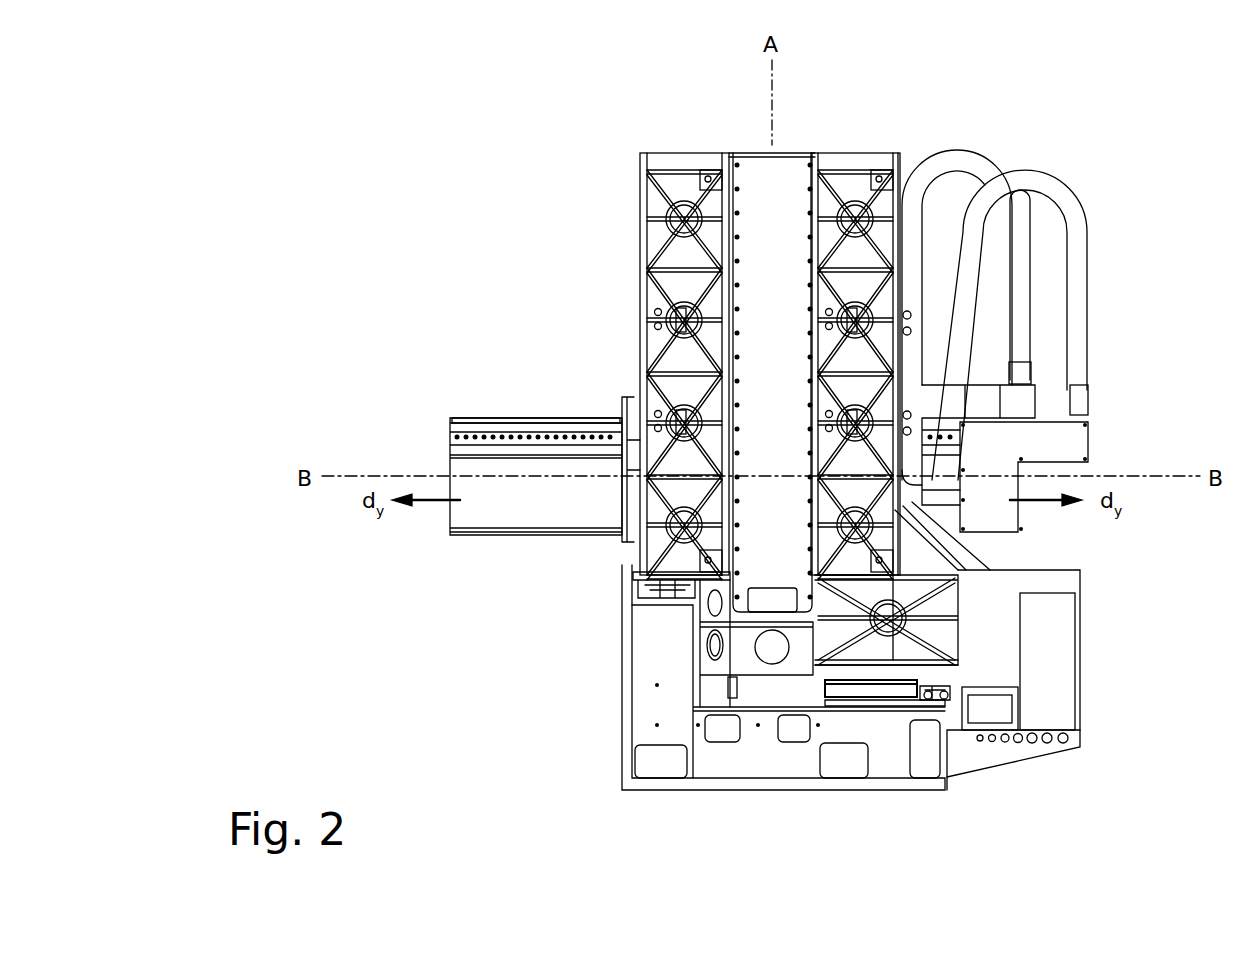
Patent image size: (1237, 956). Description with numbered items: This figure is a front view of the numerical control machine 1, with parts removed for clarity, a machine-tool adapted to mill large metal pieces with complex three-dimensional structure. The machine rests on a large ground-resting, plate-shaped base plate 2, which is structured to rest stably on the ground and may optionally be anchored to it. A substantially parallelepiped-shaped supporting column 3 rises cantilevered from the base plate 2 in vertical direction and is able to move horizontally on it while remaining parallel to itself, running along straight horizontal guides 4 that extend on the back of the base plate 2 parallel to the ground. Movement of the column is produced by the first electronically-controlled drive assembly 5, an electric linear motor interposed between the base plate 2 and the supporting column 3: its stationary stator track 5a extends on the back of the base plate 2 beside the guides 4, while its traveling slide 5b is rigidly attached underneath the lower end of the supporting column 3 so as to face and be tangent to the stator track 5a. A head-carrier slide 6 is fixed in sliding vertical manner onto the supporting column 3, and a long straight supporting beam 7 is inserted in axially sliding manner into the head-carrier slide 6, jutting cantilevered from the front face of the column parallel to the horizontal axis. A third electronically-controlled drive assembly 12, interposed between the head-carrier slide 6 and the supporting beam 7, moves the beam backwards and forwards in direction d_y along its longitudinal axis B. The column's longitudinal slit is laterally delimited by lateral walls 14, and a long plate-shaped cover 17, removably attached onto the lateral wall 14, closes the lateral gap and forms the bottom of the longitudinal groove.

The numerical control machine 1 is at (362, 250).
The base plate 2 is at (748, 768).
The supporting column 3 is at (662, 162).
The straight horizontal guides 4 is at (665, 580).
The first electronically-controlled drive assembly 5 is at (945, 680).
The stator track 5a is at (862, 690).
The traveling slide 5b is at (855, 690).
The head-carrier slide 6 is at (622, 398).
The supporting beam 7 is at (505, 513).
The third electronically-controlled drive assembly 12 is at (578, 420).
The lateral wall 14 is at (760, 326).
The plate-shaped cover 17 is at (780, 195).